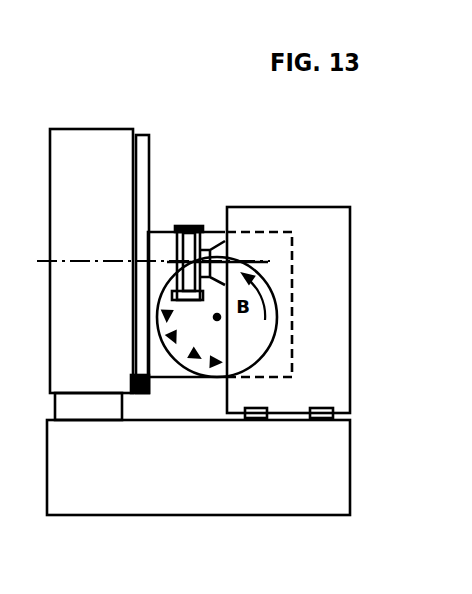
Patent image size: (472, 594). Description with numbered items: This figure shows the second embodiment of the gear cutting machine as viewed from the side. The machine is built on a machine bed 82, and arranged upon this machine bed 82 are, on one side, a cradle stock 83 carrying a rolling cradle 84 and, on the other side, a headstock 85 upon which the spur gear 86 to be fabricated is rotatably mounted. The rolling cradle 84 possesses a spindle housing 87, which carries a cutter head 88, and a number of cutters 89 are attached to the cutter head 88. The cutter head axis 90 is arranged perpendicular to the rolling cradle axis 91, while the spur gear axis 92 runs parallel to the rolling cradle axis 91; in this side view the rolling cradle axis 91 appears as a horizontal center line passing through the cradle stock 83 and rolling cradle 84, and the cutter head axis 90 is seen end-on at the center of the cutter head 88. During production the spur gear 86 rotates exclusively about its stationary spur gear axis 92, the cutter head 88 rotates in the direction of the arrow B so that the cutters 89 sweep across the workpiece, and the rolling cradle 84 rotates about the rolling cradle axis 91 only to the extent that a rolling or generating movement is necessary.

The machine bed 82 is at (131, 502).
The cradle stock 83 is at (94, 137).
The rolling cradle 84 is at (141, 138).
The headstock 85 is at (327, 218).
The spur gear 86 is at (188, 225).
The spindle housing 87 is at (158, 378).
The cutter head 88 is at (197, 368).
The cutters 89 is at (174, 339).
The cutter head axis 90 is at (217, 317).
The rolling cradle axis 91 is at (110, 258).
The spur gear axis 92 is at (262, 258).